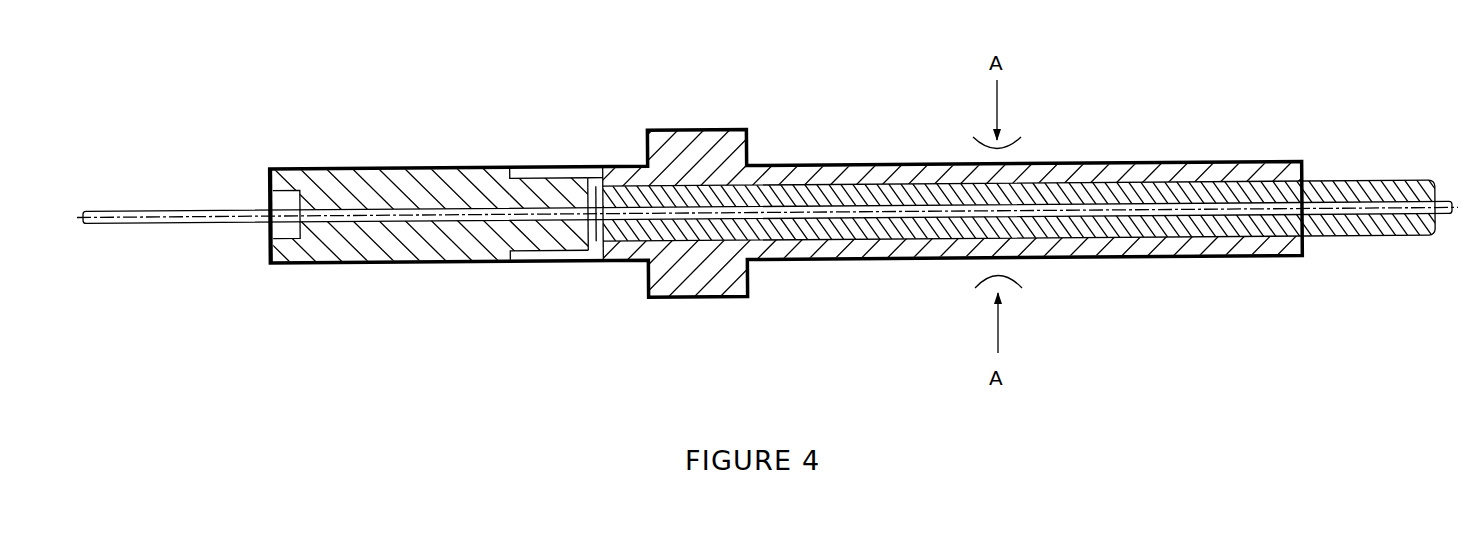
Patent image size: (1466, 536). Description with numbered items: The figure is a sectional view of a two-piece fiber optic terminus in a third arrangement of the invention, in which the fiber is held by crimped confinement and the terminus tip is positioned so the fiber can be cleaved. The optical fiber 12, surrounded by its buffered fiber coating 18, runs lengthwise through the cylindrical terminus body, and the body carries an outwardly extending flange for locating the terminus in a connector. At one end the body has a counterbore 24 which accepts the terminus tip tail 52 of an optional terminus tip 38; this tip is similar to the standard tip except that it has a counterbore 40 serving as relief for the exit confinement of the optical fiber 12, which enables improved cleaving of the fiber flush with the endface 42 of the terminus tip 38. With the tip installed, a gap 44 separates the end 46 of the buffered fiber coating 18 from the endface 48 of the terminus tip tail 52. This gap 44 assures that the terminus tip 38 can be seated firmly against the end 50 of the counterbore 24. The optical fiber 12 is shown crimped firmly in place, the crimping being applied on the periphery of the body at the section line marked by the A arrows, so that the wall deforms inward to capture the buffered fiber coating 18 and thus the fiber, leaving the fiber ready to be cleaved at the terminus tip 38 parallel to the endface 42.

The optical fiber 12 is at (153, 209).
The buffered fiber coating 18 is at (766, 185).
The counterbore 24 is at (558, 246).
The terminus tip 38 is at (310, 264).
The counterbore 40 is at (267, 188).
The endface 42 is at (267, 171).
The gap 44 is at (598, 247).
The end of buffered fiber coating 46 is at (603, 187).
The endface of terminus tip tail 48 is at (590, 187).
The end of counterbore 50 is at (583, 248).
The terminus tip tail 52 is at (510, 253).